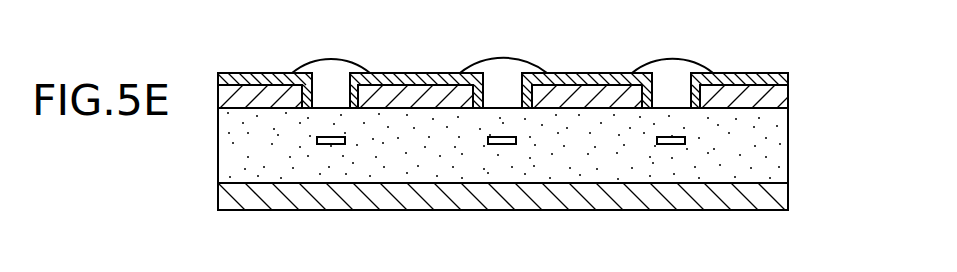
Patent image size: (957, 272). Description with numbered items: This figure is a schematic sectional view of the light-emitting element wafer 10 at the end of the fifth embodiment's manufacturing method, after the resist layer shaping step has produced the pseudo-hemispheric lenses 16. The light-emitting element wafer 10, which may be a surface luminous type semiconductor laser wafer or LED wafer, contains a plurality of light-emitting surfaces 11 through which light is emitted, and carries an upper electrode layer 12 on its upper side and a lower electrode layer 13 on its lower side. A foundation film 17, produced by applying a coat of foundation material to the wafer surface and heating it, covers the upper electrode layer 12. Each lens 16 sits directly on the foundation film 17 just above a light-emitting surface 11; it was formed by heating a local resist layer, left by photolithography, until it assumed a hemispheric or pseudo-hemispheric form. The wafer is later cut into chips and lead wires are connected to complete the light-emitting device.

The light-emitting element wafer 10 is at (777, 132).
The light-emitting surface 11 is at (507, 144).
The upper electrode layer 12 is at (380, 97).
The lower electrode layer 13 is at (781, 193).
The lens 16 is at (328, 80).
The foundation film 17 is at (448, 82).